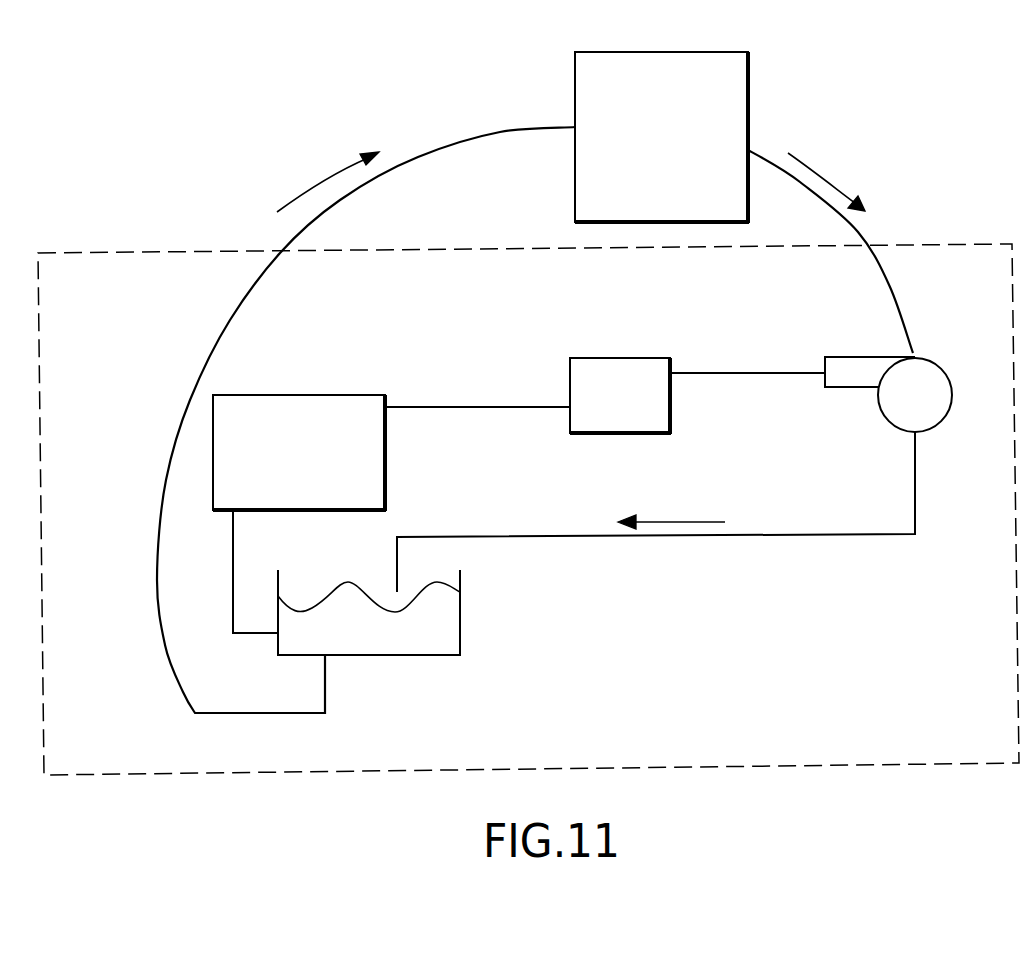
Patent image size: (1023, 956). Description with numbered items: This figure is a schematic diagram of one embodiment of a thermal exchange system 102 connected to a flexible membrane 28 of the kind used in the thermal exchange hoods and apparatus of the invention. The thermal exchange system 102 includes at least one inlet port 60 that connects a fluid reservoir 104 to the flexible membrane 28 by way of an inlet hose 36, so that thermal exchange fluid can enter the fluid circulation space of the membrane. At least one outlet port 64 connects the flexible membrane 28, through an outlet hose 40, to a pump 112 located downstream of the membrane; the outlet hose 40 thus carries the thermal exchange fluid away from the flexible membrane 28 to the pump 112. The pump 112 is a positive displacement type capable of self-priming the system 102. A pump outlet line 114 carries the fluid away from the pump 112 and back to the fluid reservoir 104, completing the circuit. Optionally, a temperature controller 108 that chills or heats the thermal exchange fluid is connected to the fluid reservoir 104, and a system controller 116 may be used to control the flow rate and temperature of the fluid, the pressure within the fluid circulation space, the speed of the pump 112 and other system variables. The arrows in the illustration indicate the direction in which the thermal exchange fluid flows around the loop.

The thermal exchange system 102 is at (893, 80).
The flexible membrane 28 is at (675, 147).
The inlet hose 36 is at (418, 155).
The inlet port 60 is at (575, 127).
The outlet port 64 is at (757, 150).
The outlet hose 40 is at (858, 232).
The temperature controller 108 is at (320, 464).
The system controller 116 is at (641, 411).
The pump 112 is at (931, 413).
The pump outlet line 114 is at (827, 534).
The fluid reservoir 104 is at (376, 646).